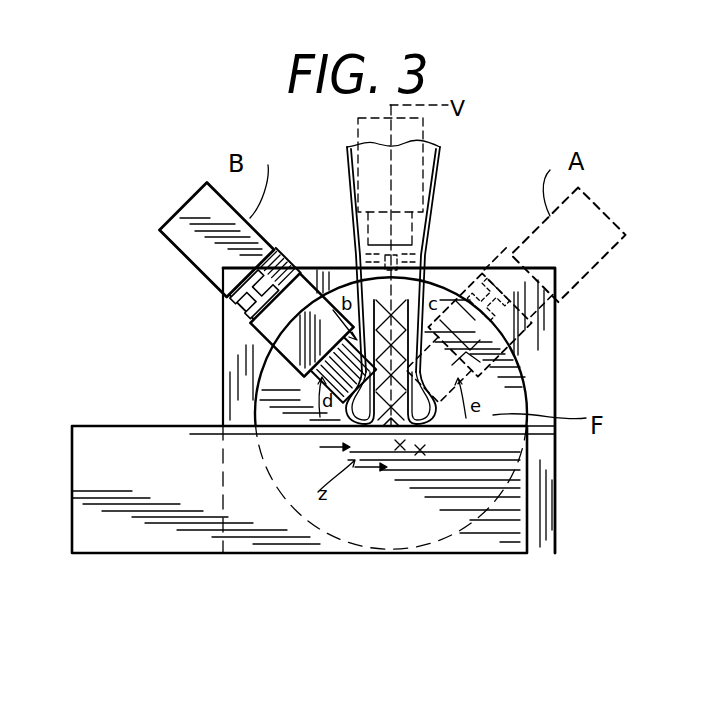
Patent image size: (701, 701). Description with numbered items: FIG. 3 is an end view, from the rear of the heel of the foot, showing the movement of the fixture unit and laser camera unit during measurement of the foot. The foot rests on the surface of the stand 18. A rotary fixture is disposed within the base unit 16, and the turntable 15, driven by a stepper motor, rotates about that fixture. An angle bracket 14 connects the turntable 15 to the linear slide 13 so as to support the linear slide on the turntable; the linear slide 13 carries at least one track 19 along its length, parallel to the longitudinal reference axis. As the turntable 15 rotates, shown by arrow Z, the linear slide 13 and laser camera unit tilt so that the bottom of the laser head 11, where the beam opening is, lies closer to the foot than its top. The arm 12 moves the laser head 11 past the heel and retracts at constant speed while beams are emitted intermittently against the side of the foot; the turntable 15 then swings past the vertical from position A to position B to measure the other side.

The laser head 11 is at (193, 216).
The arm 12 is at (250, 302).
The linear slide 13 is at (283, 347).
The angle bracket 14 is at (392, 466).
The turntable 15 is at (493, 385).
The base unit 16 is at (517, 508).
The stand 18 is at (493, 448).
The track 19 is at (548, 335).